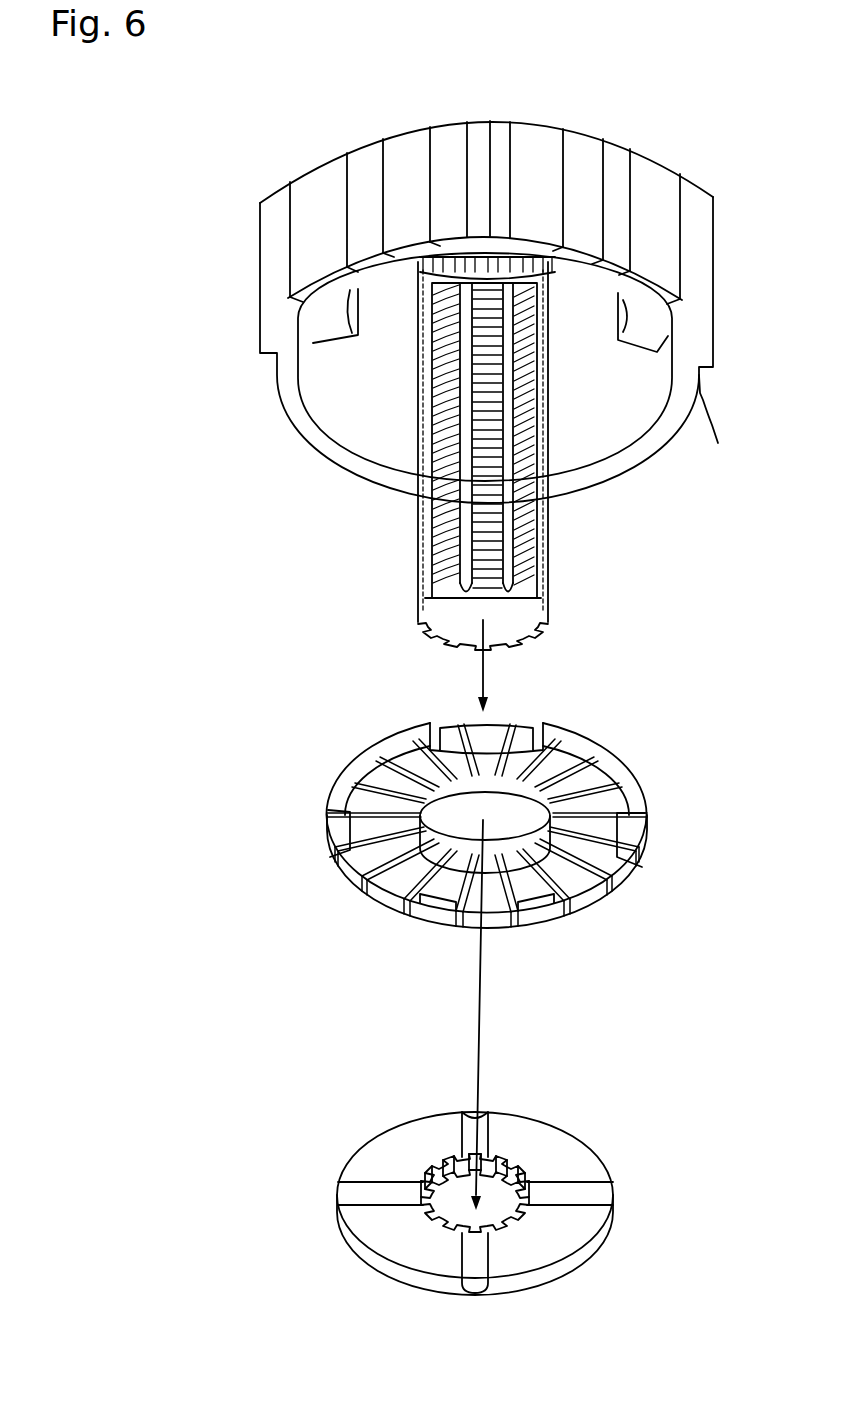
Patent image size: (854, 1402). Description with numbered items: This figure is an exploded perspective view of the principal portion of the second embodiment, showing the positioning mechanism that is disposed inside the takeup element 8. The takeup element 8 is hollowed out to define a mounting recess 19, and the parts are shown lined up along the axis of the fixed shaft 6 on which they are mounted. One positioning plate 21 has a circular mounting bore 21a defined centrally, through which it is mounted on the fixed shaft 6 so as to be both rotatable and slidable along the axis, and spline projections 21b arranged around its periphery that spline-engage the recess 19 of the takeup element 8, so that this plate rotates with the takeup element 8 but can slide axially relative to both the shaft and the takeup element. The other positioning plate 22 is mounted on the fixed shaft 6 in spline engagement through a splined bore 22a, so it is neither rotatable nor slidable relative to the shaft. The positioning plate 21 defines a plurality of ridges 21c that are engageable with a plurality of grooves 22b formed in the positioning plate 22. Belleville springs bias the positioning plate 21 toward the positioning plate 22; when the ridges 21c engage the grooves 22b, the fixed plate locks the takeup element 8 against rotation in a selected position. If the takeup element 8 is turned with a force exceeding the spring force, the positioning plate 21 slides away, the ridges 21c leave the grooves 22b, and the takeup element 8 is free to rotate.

The takeup element 8 is at (451, 329).
The mounting recess 19 is at (374, 424).
The fixed shaft 6 is at (418, 566).
The positioning plate 21 is at (485, 960).
The circular mounting bore 21a is at (520, 850).
The spline projections 21b is at (327, 828).
The ridges 21c is at (608, 768).
The positioning plate 22 is at (429, 1229).
The splined bore 22a is at (447, 1210).
The grooves 22b is at (383, 1190).